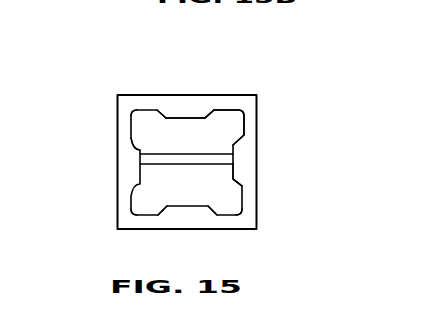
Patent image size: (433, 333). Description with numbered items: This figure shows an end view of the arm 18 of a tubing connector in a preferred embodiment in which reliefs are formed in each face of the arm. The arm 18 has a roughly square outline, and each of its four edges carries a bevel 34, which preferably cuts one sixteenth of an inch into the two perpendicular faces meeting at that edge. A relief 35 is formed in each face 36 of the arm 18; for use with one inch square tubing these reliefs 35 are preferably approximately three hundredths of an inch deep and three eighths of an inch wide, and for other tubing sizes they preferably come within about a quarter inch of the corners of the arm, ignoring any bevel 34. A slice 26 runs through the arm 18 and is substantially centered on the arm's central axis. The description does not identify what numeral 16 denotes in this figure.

The first body portion 16 is at (157, 105).
The arm 18 is at (217, 120).
The slice 26 is at (168, 161).
The bevel 34 is at (118, 98).
The relief 35 is at (182, 117).
The face 36 is at (149, 73).